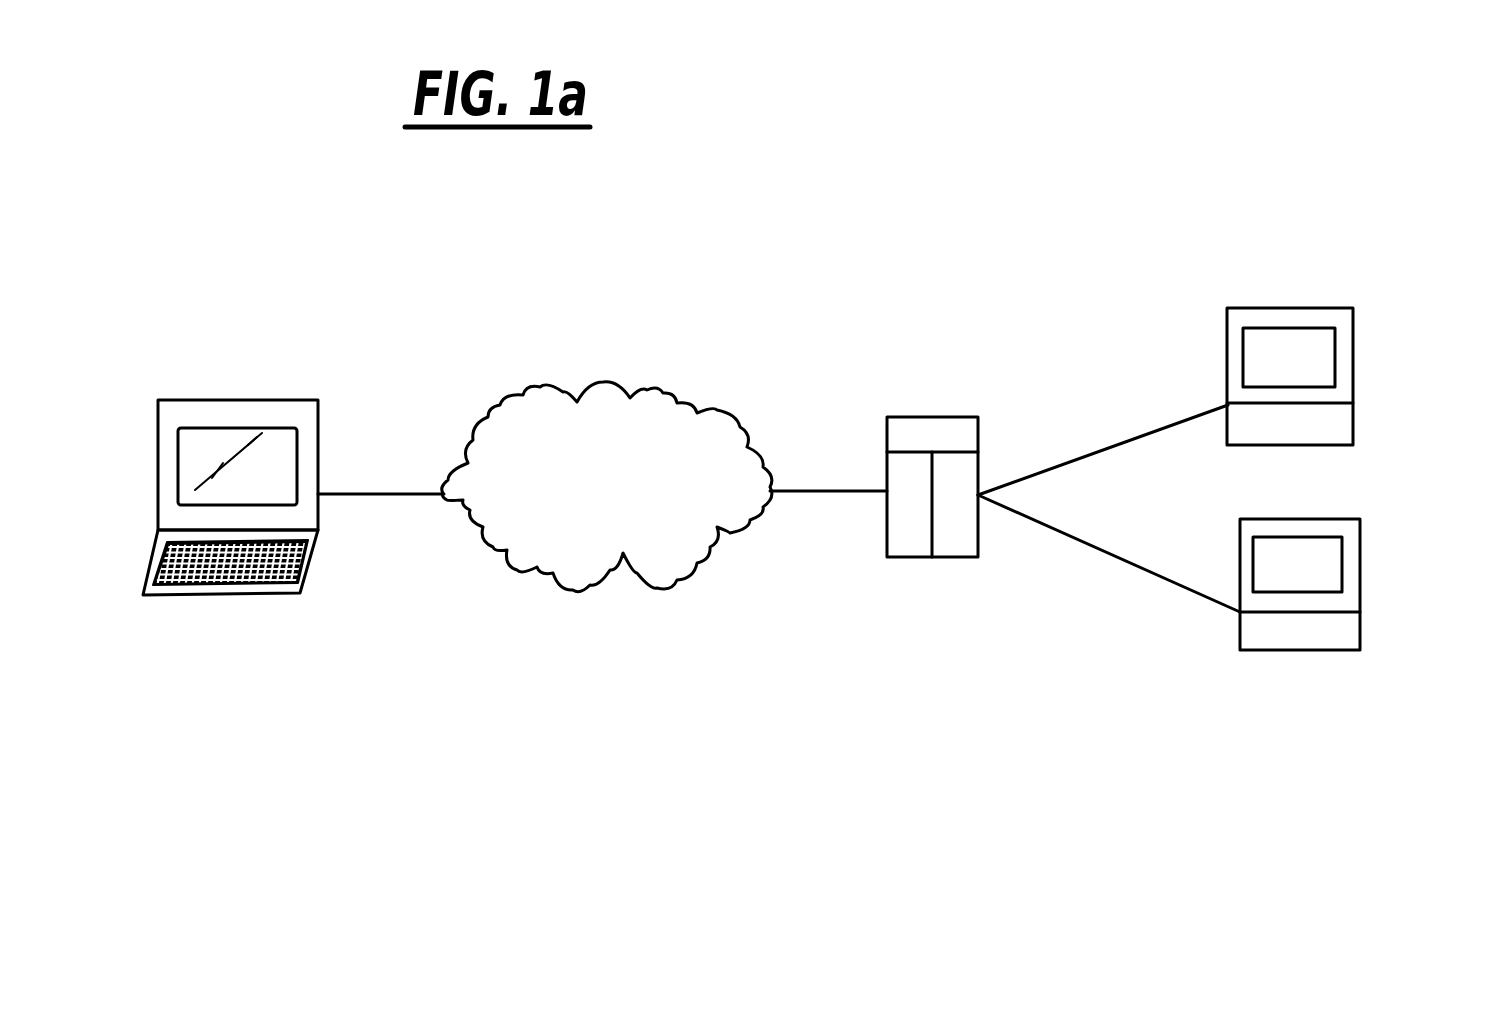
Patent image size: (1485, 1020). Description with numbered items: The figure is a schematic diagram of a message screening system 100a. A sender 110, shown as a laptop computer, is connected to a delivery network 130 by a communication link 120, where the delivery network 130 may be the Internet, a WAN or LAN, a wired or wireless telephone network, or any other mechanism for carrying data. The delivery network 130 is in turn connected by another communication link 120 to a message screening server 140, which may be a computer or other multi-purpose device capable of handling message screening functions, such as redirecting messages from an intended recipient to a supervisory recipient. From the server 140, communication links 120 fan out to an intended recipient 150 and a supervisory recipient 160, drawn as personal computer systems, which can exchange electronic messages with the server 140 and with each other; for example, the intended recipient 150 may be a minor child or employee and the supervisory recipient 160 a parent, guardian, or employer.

The message screening system 100a is at (987, 241).
The sender 110 is at (238, 400).
The communication links 120 is at (375, 495).
The delivery network 130 is at (665, 396).
The message screening server 140 is at (932, 417).
The intended recipient 150 is at (1353, 330).
The supervisory recipient 160 is at (1360, 548).